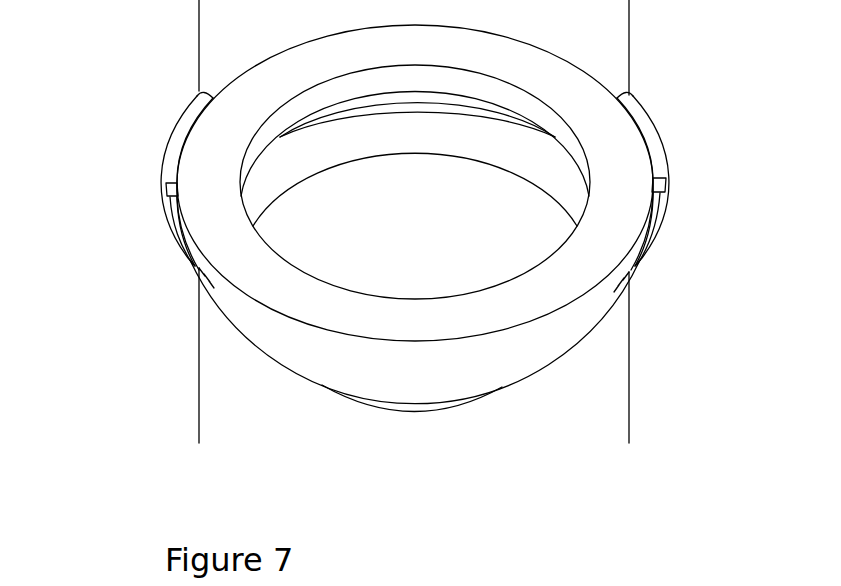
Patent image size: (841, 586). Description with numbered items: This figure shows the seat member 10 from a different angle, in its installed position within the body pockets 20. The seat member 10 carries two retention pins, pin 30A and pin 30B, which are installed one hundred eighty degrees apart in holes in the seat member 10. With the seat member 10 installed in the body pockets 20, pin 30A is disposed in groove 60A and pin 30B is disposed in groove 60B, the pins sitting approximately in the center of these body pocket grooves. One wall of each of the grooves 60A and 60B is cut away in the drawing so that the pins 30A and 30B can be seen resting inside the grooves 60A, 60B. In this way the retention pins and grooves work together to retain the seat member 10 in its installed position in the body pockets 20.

The seat member 10 is at (411, 330).
The body pockets 20 is at (179, 32).
The pin 30A is at (168, 186).
The pin 30B is at (655, 181).
The groove 60A is at (192, 113).
The groove 60B is at (655, 135).